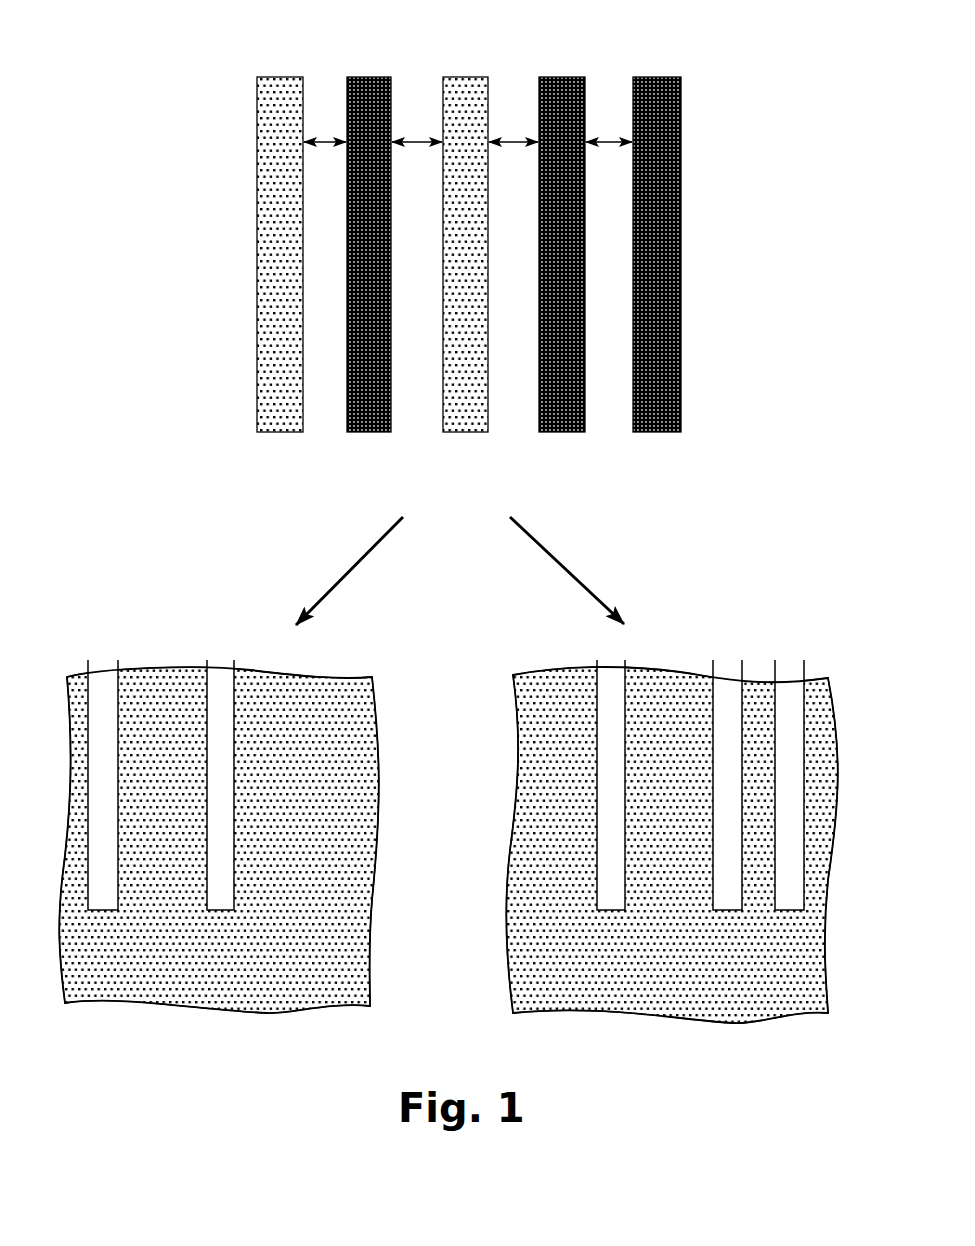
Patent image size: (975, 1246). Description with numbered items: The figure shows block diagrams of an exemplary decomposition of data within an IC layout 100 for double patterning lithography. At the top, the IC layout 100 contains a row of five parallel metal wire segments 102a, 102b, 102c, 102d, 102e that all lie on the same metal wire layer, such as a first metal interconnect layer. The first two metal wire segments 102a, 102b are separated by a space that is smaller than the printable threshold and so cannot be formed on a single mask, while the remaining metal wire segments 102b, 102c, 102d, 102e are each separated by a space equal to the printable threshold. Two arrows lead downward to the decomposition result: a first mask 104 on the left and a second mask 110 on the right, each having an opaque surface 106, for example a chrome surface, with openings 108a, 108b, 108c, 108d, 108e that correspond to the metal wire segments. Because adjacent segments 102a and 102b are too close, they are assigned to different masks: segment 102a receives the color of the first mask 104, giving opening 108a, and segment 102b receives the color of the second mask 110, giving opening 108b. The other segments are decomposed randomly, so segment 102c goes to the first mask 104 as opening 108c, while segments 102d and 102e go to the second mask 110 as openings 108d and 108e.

The IC layout 100 is at (164, 50).
The metal wire segment 102a is at (282, 434).
The metal wire segment 102b is at (370, 434).
The metal wire segment 102c is at (465, 434).
The metal wire segment 102d is at (558, 434).
The metal wire segment 102e is at (657, 434).
The first mask 104 is at (204, 817).
The opaque surface 106 is at (465, 822).
The opening 108a is at (104, 913).
The opening 108b is at (612, 913).
The opening 108c is at (219, 913).
The opening 108d is at (722, 913).
The opening 108e is at (790, 913).
The second mask 110 is at (675, 823).